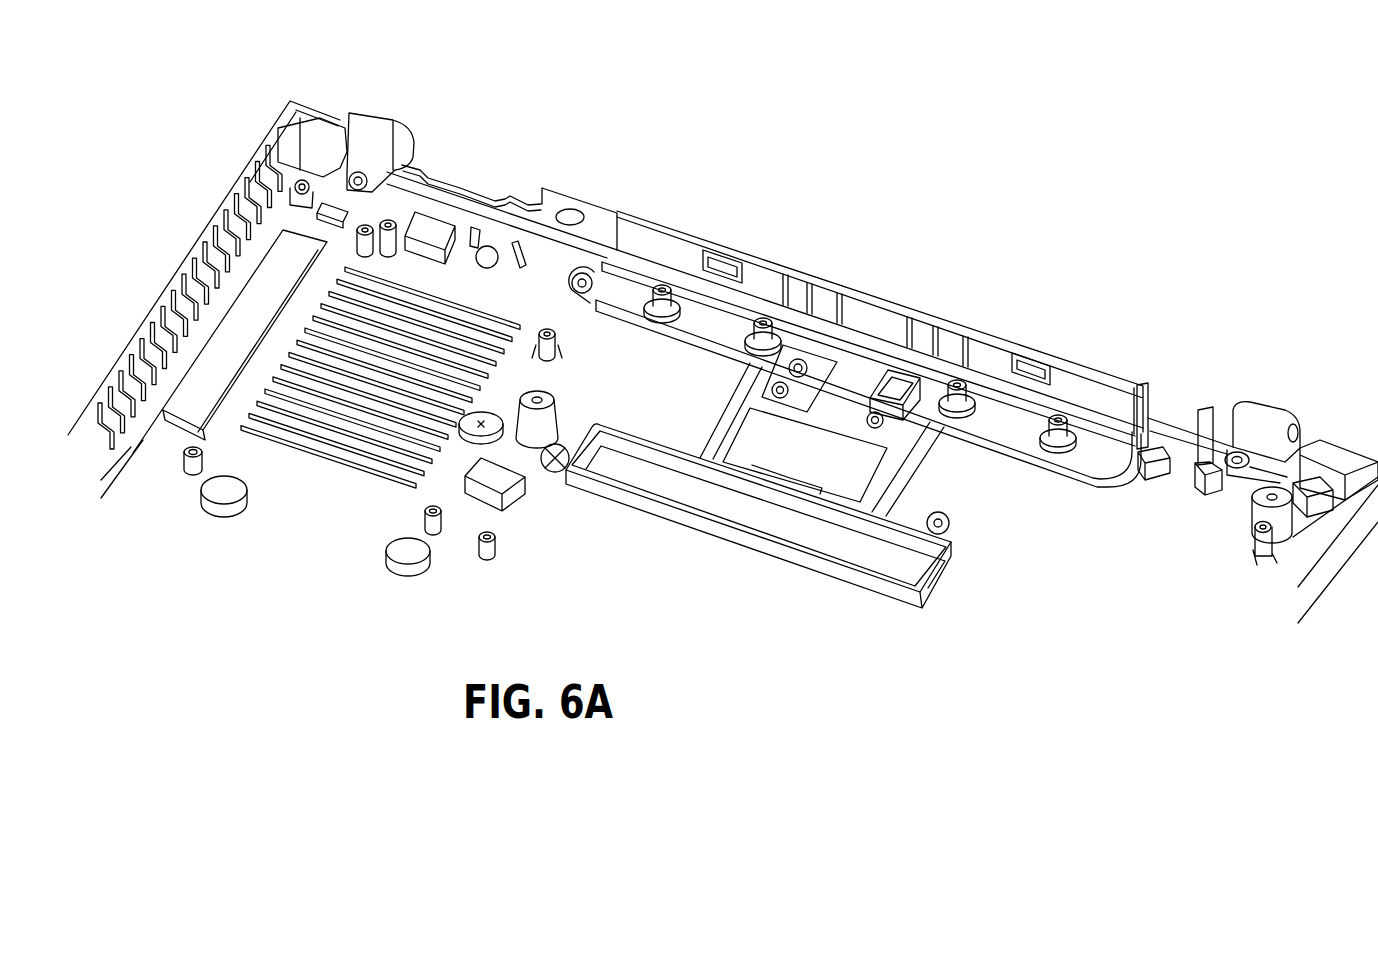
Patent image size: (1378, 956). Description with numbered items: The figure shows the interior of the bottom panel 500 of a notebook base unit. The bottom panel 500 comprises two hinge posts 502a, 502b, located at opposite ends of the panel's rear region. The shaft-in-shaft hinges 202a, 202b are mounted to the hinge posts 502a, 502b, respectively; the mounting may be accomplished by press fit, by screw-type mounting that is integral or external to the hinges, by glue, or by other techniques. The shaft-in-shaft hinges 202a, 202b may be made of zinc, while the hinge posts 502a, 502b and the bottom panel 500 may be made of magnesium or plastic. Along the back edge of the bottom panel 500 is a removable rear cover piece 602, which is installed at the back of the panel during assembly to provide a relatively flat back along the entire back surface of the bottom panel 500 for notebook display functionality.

The bottom panel 500 is at (869, 71).
The hinge post 502a is at (277, 141).
The hinge post 502b is at (1365, 478).
The shaft-in-shaft hinge 202a is at (378, 110).
The shaft-in-shaft hinge 202b is at (1258, 415).
The rear cover piece 602 is at (875, 310).